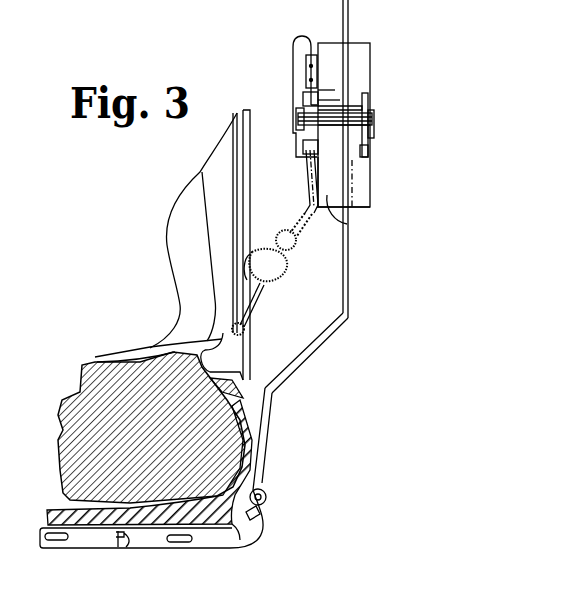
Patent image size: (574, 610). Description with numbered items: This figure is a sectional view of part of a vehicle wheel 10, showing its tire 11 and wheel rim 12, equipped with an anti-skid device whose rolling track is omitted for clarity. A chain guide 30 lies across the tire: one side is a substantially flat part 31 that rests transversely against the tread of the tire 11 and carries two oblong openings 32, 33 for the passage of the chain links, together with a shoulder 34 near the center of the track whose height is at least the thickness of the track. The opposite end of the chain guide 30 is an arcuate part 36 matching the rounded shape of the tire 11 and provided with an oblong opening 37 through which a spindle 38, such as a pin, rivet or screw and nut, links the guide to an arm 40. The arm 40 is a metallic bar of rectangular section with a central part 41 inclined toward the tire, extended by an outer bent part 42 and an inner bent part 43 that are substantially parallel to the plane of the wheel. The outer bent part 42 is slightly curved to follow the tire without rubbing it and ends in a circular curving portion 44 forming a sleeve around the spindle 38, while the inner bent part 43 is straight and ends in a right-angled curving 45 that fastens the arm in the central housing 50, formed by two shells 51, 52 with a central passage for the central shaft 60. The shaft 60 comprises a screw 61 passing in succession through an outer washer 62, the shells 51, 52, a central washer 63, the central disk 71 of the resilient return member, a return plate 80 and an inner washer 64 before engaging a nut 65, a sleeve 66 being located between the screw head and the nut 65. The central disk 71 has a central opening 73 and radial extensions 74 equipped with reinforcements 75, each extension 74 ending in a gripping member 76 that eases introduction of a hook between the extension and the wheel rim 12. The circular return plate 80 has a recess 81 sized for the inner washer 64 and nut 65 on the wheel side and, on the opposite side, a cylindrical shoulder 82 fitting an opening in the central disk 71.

The wheel 10 is at (87, 350).
The tire 11 is at (157, 370).
The wheel rim 12 is at (217, 245).
The chain guide 30 is at (191, 537).
The flat part 31 is at (95, 540).
The oblong opening 32 is at (62, 548).
The oblong opening 33 is at (177, 547).
The shoulder 34 is at (127, 550).
The arcuate part 36 is at (250, 531).
The oblong opening 37 is at (262, 512).
The spindle 38 is at (267, 495).
The arm 40 is at (362, 245).
The central part 41 is at (308, 355).
The outer bent part 42 is at (272, 408).
The inner bent part 43 is at (350, 248).
The circular curving portion 44 is at (255, 487).
The right-angled curving 45 is at (353, 172).
The central housing 50 is at (392, 127).
The shell 51 is at (358, 192).
The shell 52 is at (350, 222).
The central shaft 60 is at (366, 84).
The screw 61 is at (299, 123).
The outer washer 62 is at (366, 106).
The central washer 63 is at (340, 111).
The inner washer 64 is at (322, 100).
The nut 65 is at (318, 88).
The sleeve 66 is at (373, 143).
The central disk 71 is at (310, 70).
The central opening 73 is at (307, 162).
The radial extension 74 is at (302, 225).
The reinforcement 75 is at (272, 285).
The gripping member 76 is at (243, 333).
The return plate 80 is at (279, 92).
The recess 81 is at (305, 98).
The cylindrical shoulder 82 is at (308, 147).